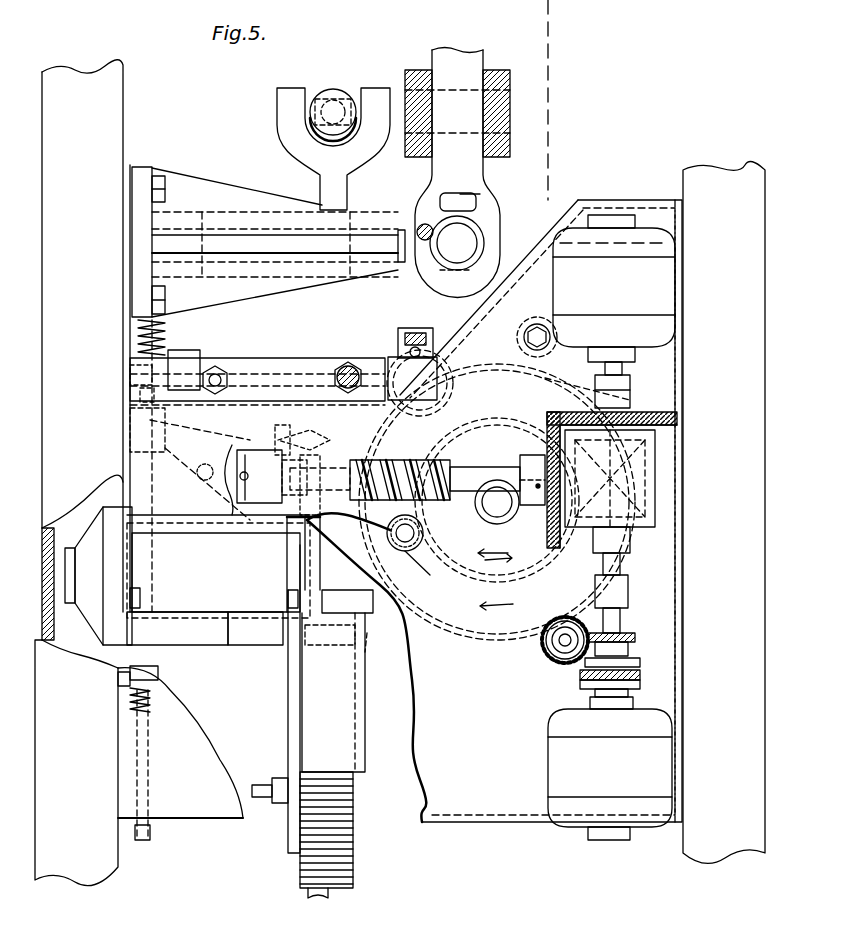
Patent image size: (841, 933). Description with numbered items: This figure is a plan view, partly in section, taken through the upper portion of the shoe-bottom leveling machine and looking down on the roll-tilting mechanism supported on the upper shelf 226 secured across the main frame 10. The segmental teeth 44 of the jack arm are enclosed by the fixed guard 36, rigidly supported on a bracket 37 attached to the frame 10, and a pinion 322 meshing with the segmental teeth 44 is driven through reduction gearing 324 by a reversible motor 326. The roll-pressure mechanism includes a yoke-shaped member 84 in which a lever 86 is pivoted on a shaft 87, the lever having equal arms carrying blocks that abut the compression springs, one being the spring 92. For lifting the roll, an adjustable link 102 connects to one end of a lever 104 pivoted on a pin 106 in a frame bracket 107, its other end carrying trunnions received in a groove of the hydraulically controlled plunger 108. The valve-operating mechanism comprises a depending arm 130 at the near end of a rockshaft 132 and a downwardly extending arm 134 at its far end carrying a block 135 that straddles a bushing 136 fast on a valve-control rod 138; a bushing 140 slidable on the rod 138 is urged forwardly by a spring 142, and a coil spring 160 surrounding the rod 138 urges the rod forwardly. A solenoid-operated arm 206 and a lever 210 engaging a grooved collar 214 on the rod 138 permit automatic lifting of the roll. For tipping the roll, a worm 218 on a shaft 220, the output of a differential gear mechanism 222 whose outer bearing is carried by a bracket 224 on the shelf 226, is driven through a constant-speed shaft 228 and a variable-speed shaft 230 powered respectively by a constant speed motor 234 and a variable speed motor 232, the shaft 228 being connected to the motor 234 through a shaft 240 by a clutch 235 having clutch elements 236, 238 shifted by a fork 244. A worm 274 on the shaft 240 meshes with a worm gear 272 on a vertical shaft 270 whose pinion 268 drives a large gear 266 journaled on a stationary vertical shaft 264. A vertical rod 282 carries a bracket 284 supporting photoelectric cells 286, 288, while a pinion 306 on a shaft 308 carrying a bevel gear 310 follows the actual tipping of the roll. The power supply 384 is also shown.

The main frame 10 is at (108, 113).
The guard 36 is at (367, 745).
The bracket 37 is at (182, 543).
The segmental teeth 44 is at (345, 832).
The yoke-shaped member 84 is at (497, 160).
The lever 86 is at (483, 58).
The shaft 87 is at (405, 98).
The compression spring 92 is at (452, 288).
The adjustable link 102 is at (365, 360).
The lever 104 is at (272, 143).
The pin 106 is at (405, 212).
The frame bracket 107 is at (320, 232).
The plunger 108 is at (338, 90).
The depending arm 130 is at (420, 328).
The rockshaft 132 is at (265, 370).
The downwardly extending arm 134 is at (202, 352).
The block 135 is at (128, 372).
The bushing 136 is at (128, 405).
The valve-control rod 138 is at (135, 832).
The bushing 140 is at (140, 325).
The spring 142 is at (165, 333).
The coil spring 160 is at (152, 700).
The arm 206 is at (270, 440).
The lever 210 is at (170, 448).
The grooved collar 214 is at (128, 443).
The worm 218 is at (392, 462).
The shaft 220 is at (472, 467).
The differential gear mechanism 222 is at (640, 515).
The bracket 224 is at (235, 500).
The upper shelf 226 is at (585, 200).
The shaft 228 is at (620, 562).
The shaft 230 is at (628, 385).
The variable speed motor 232 is at (655, 293).
The constant speed motor 234 is at (660, 782).
The clutch 235 is at (640, 683).
The clutch element 236 is at (634, 690).
The clutch element 238 is at (640, 672).
The shaft 240 is at (620, 620).
The fork 244 is at (640, 663).
The vertical stationary shaft 264 is at (512, 512).
The large gear 266 is at (575, 605).
The pinion 268 is at (535, 640).
The vertical shaft 270 is at (550, 650).
The worm gear 272 is at (558, 665).
The worm 274 is at (636, 638).
The vertical rod 282 is at (560, 348).
The bracket 284 is at (685, 378).
The photoelectric cell 286 is at (655, 463).
The photoelectric cell 288 is at (565, 394).
The pinion 306 is at (382, 554).
The shaft 308 is at (420, 528).
The bevel gear 310 is at (320, 533).
The pinion 322 is at (356, 663).
The reduction gearing 324 is at (257, 642).
The reversible motor 326 is at (185, 642).
The power supply 384 is at (548, 115).